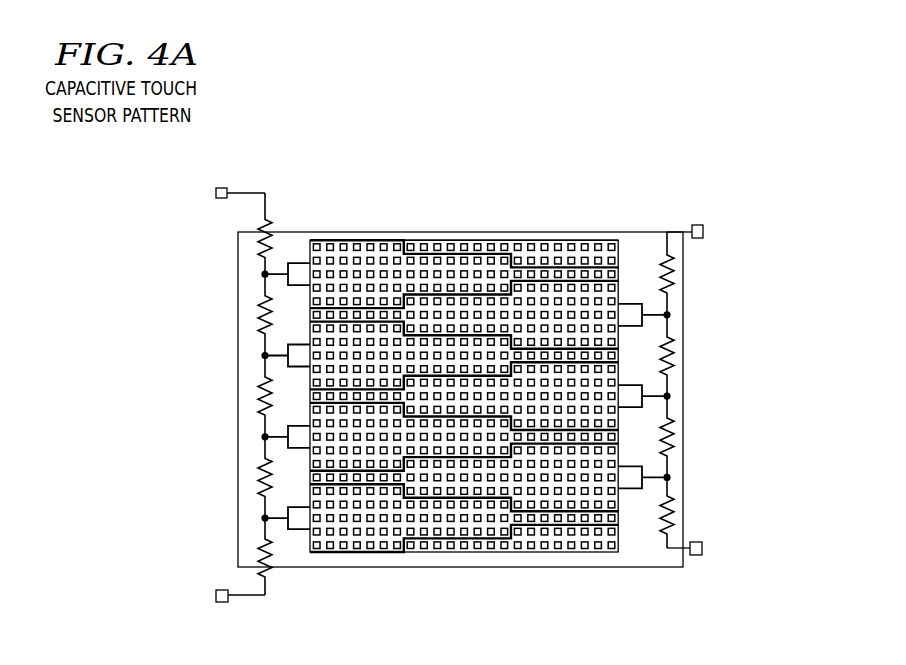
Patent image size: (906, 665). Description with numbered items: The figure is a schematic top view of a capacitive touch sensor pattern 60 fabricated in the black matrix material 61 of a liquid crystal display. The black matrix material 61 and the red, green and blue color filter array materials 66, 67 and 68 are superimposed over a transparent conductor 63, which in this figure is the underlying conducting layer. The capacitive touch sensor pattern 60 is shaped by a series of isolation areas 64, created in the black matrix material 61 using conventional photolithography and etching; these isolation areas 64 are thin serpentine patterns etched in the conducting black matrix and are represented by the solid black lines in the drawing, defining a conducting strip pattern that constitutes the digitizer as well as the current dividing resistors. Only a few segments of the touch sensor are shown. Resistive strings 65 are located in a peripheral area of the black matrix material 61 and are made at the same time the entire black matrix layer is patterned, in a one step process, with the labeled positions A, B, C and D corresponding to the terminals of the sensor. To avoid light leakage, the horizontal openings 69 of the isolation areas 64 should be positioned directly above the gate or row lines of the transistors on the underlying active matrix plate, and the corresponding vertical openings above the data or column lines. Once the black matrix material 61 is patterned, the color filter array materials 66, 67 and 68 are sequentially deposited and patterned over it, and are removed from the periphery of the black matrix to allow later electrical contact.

The capacitive touch sensor pattern 60 is at (110, 148).
The black matrix material 61 is at (473, 239).
The transparent conductor 63 is at (540, 568).
The isolation areas 64 is at (310, 309).
The resistive strings 65 is at (677, 353).
The red color filter array 66 is at (312, 239).
The green color filter array 67 is at (338, 239).
The blue color filter array 68 is at (365, 239).
The horizontal openings 69 is at (543, 238).